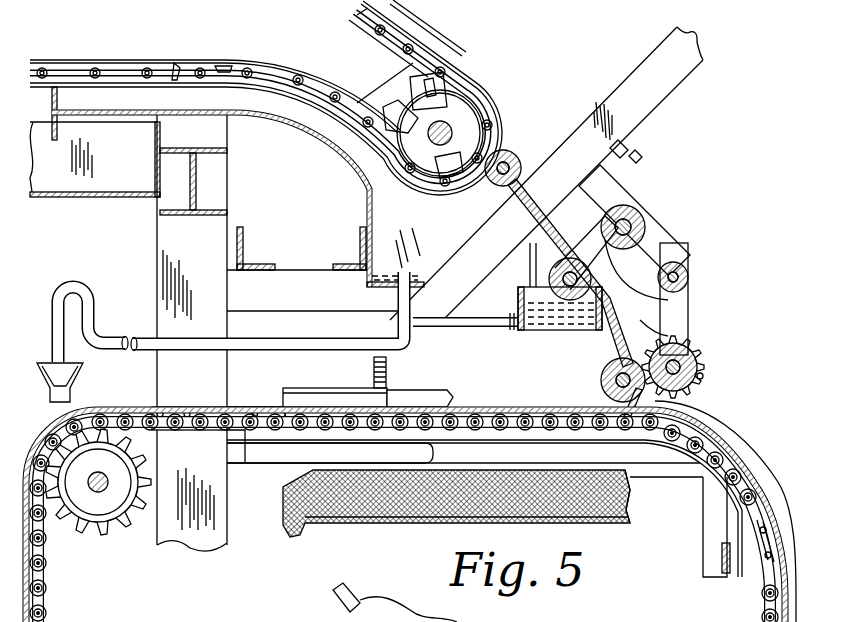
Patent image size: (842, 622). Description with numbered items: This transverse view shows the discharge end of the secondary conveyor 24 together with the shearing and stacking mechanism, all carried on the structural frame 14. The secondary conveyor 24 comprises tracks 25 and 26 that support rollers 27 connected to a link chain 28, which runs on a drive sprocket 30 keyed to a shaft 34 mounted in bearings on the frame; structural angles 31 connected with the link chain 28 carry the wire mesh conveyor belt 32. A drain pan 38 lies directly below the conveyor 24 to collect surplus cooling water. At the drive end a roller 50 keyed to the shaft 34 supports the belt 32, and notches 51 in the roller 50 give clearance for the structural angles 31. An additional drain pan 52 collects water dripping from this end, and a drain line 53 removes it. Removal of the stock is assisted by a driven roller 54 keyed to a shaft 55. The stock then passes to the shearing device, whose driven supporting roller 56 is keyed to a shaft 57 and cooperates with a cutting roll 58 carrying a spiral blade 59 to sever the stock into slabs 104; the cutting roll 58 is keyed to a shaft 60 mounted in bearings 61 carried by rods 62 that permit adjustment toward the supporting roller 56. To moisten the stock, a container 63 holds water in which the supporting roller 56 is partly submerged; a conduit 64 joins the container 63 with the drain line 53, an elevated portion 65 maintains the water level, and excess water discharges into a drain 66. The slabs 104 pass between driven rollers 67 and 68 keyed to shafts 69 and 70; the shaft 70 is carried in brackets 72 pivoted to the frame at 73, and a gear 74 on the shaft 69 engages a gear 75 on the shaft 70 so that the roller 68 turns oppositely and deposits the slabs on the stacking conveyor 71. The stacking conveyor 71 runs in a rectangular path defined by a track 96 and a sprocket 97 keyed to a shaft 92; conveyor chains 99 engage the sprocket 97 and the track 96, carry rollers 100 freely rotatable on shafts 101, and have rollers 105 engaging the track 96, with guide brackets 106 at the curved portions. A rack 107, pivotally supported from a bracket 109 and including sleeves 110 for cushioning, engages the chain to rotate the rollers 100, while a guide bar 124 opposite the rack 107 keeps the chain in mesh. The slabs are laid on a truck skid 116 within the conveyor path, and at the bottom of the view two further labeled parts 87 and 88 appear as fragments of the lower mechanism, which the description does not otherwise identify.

The structural frame 14 is at (217, 533).
The secondary conveyor 24 is at (457, 45).
The track 25 is at (380, 22).
The track 26 is at (223, 66).
The rollers 27 is at (198, 63).
The link chain 28 is at (265, 77).
The drive sprocket 30 is at (463, 68).
The structural angles 31 is at (177, 67).
The conveyor belt 32 is at (70, 72).
The shaft 34 is at (478, 108).
The drain pan 38 is at (47, 182).
The roller 50 is at (452, 127).
The notches 51 is at (432, 87).
The drain pan 52 is at (388, 208).
The drain line 53 is at (303, 343).
The driven roller 54 is at (495, 172).
The shaft 55 is at (546, 173).
The supporting roller 56 is at (547, 320).
The shaft 57 is at (557, 328).
The cutting roll 58 is at (643, 207).
The spiral blade 59 is at (652, 245).
The shaft 60 is at (650, 218).
The bearings 61 is at (645, 228).
The rods 62 is at (680, 300).
The container 63 is at (517, 320).
The conduit 64 is at (477, 324).
The elevated portion 65 is at (77, 297).
The drain 66 is at (67, 373).
The driven roller 67 is at (673, 410).
The roller 68 is at (693, 353).
The shaft 69 is at (660, 392).
The shaft 70 is at (700, 358).
The stacking conveyor 71 is at (752, 453).
The brackets 72 is at (688, 297).
The pivot 73 is at (688, 274).
The gear 74 is at (643, 327).
The gear 75 is at (704, 377).
The lower guide 87 is at (310, 621).
The lower bracket 88 is at (328, 621).
The shaft 92 is at (100, 487).
The track 96 is at (767, 510).
The sprocket 97 is at (107, 543).
The conveyor chains 99 is at (768, 543).
The rollers 100 is at (240, 437).
The shafts 101 is at (250, 410).
The slabs 104 is at (630, 505).
The rollers 105 is at (187, 410).
The guide brackets 106 is at (740, 528).
The rack 107 is at (420, 397).
The bracket 109 is at (290, 392).
The sleeves 110 is at (340, 397).
The truck skid 116 is at (390, 525).
The guide bar 124 is at (277, 470).